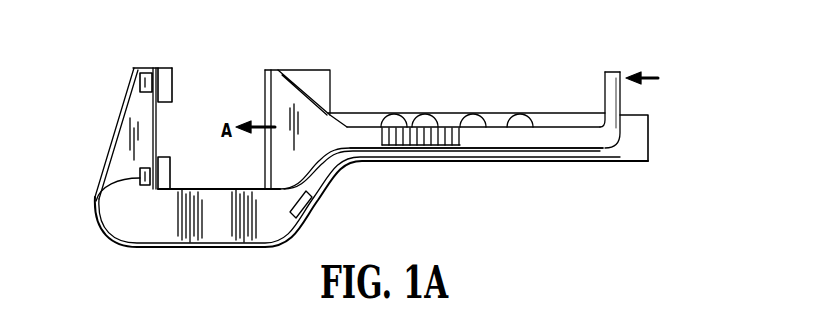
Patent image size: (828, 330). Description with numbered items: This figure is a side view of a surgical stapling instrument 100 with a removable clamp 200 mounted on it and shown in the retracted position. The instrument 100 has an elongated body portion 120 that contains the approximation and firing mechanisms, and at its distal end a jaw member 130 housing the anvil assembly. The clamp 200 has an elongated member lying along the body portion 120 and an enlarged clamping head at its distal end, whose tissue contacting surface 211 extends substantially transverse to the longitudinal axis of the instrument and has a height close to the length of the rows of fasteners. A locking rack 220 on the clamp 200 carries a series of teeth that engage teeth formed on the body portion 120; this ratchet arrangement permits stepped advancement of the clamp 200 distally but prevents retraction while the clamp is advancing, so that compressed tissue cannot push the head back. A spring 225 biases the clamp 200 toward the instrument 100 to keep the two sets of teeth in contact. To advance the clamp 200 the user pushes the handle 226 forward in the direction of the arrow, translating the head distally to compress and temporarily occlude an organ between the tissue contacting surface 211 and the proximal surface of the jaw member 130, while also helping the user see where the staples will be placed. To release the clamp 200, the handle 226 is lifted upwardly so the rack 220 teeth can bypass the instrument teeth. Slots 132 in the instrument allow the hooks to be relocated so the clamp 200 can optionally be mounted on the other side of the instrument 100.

The surgical stapling instrument 100 is at (182, 262).
The elongated body portion 120 is at (613, 162).
The jaw member 130 is at (122, 140).
The slots 132 is at (139, 75).
The clamp 200 is at (550, 149).
The tissue contacting surface 211 is at (265, 92).
The locking rack 220 is at (413, 149).
The spring 225 is at (402, 115).
The handle 226 is at (625, 101).